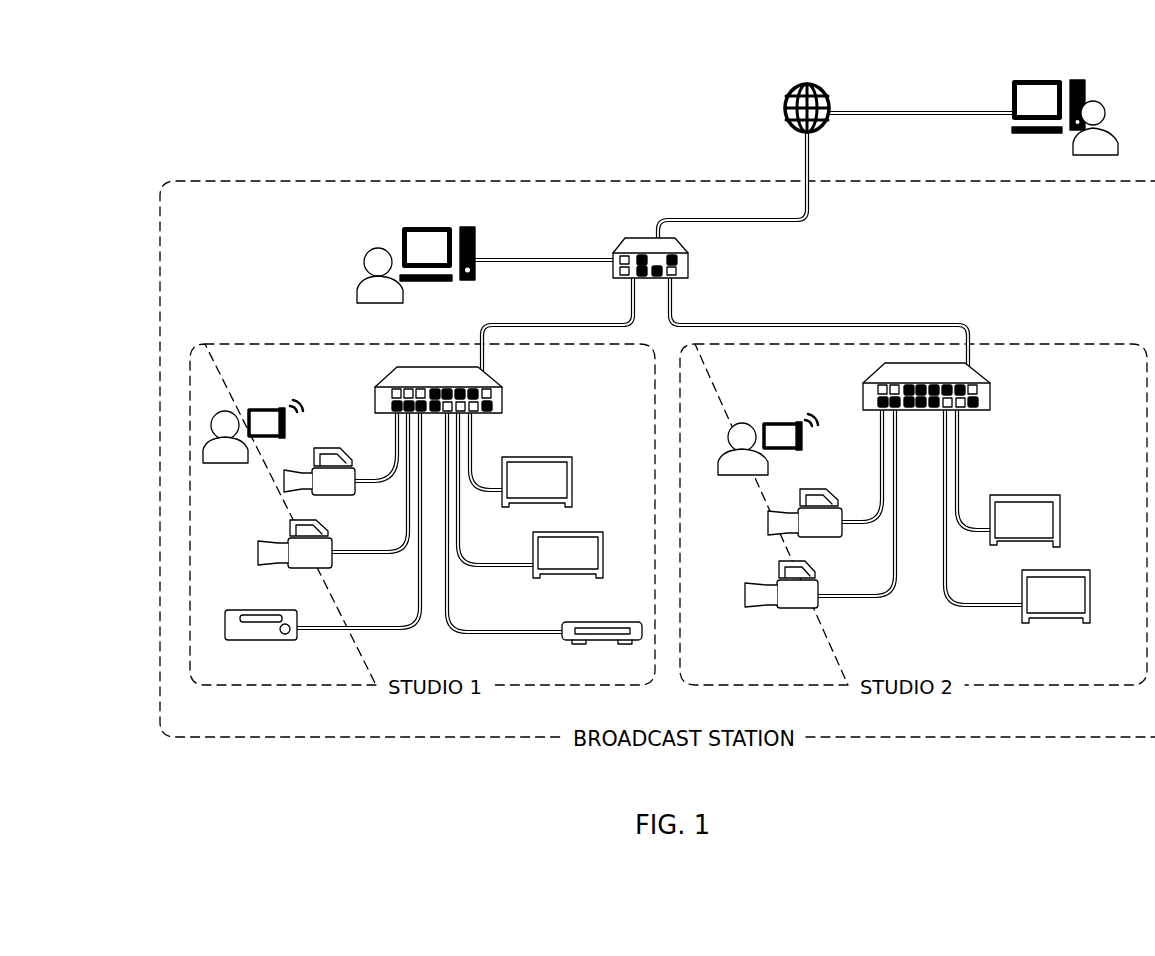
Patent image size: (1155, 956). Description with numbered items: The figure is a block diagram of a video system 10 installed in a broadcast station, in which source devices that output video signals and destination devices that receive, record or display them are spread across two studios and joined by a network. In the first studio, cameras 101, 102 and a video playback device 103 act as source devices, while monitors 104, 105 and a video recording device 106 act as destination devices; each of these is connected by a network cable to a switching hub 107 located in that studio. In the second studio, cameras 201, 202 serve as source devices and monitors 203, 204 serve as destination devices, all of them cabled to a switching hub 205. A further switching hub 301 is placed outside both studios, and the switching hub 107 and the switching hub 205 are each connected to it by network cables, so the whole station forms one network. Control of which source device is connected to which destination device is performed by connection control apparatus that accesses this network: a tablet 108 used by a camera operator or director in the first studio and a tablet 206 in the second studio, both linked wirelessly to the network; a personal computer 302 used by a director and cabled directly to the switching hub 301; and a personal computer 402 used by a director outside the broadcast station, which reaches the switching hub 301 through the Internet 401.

The video system 10 is at (898, 279).
The camera 101 is at (345, 497).
The camera 102 is at (320, 570).
The video playback device 103 is at (272, 641).
The monitor 104 is at (520, 508).
The monitor 105 is at (560, 579).
The video recording device 106 is at (605, 643).
The switching hub 107 is at (505, 401).
The tablet 108 is at (253, 408).
The camera 201 is at (832, 538).
The camera 202 is at (800, 609).
The monitor 203 is at (1003, 548).
The monitor 204 is at (1040, 624).
The switching hub 205 is at (993, 398).
The tablet 206 is at (776, 419).
The switching hub 301 is at (690, 263).
The personal computer 302 is at (426, 225).
The Internet 401 is at (810, 82).
The personal computer 402 is at (1041, 76).